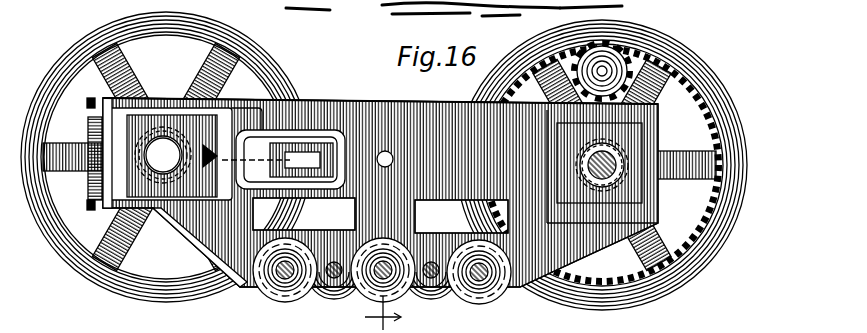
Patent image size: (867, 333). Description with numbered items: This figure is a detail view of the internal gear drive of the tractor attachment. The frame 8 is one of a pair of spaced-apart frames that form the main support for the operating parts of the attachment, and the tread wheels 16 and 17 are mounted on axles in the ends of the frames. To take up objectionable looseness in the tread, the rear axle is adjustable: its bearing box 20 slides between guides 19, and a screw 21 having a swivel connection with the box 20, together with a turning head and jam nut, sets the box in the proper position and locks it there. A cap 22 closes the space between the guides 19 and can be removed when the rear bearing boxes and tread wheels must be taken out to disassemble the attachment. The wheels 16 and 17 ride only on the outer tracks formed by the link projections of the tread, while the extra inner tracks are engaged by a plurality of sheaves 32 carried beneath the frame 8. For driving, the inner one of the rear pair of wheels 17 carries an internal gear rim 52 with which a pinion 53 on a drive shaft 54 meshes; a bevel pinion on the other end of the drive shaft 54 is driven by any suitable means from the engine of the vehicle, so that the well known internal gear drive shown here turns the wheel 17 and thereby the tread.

The frame 8 is at (420, 106).
The wheel 16 is at (88, 30).
The wheel 17 is at (387, 99).
The guide 19 is at (290, 112).
The box 20 is at (126, 179).
The screw 21 is at (283, 159).
The cap 22 is at (90, 124).
The sheave 32 is at (292, 300).
The internal gear rim 52 is at (708, 92).
The pinion 53 is at (622, 57).
The drive shaft 54 is at (580, 46).